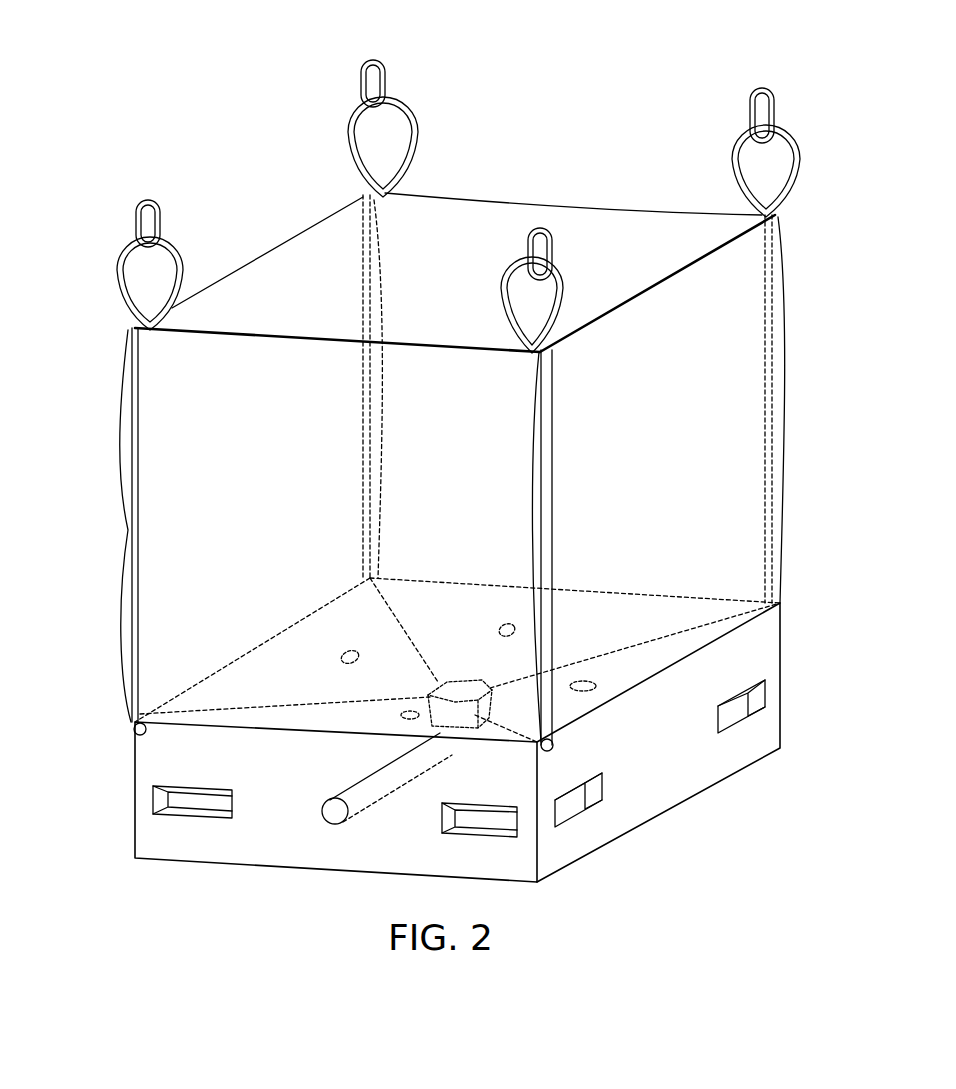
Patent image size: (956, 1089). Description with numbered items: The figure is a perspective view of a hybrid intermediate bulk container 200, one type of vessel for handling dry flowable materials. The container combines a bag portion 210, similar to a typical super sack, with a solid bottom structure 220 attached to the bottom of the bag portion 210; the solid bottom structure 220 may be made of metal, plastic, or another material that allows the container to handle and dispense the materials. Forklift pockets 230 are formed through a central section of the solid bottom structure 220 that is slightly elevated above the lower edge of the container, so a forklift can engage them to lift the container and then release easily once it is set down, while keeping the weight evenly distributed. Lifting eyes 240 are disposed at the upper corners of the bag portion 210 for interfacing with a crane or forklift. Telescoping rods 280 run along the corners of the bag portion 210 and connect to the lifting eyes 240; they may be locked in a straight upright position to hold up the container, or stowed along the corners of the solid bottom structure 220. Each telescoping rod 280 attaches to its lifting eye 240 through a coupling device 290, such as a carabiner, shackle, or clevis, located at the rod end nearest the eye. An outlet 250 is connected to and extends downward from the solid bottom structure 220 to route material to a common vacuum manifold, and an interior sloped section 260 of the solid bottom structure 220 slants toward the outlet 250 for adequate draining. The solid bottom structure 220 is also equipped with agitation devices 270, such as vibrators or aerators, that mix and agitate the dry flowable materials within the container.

The hybrid intermediate bulk container 200 is at (232, 60).
The bag portion 210 is at (283, 250).
The solid bottom structure 220 is at (135, 804).
The forklift pockets 230 is at (198, 797).
The lifting eyes 240 is at (162, 233).
The outlet 250 is at (385, 802).
The interior sloped section 260 is at (693, 620).
The agitation devices 270 is at (500, 630).
The telescoping rods 280 is at (362, 432).
The coupling device 290 is at (145, 197).